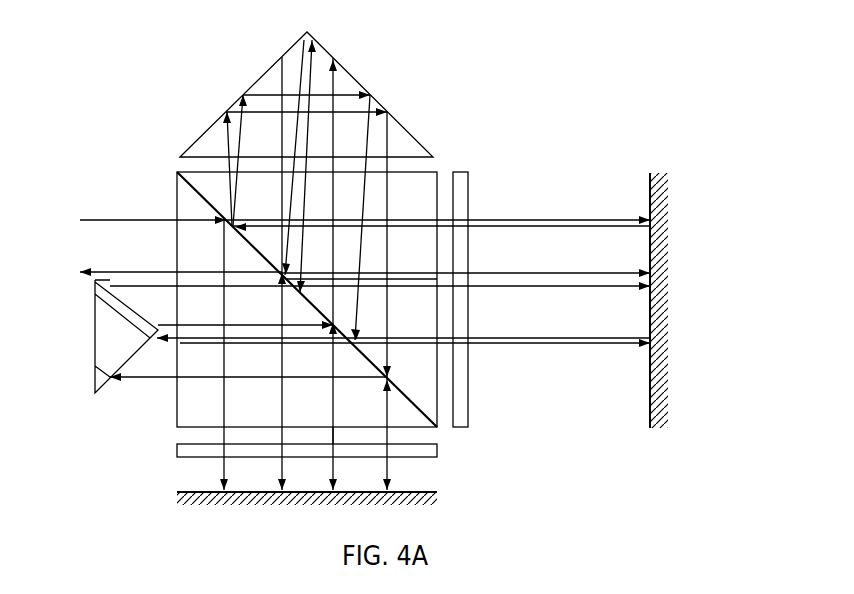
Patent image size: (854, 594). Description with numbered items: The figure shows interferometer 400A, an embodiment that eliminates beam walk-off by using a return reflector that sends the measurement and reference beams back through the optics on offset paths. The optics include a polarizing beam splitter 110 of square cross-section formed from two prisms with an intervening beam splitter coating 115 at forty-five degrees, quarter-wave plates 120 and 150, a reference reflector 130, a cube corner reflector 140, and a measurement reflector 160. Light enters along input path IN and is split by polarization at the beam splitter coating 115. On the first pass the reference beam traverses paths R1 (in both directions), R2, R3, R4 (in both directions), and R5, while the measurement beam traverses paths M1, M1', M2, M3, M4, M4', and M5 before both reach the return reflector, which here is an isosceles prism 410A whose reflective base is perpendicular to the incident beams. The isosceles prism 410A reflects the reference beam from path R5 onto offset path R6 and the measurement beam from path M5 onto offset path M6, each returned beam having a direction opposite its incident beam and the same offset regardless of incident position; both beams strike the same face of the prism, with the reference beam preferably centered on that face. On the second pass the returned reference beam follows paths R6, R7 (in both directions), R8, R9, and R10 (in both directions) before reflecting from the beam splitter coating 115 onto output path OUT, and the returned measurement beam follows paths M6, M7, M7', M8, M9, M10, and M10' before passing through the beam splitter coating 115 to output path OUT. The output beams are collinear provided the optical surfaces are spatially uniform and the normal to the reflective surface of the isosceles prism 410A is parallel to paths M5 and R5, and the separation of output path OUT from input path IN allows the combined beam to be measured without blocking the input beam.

The interferometer 400A is at (143, 52).
The isosceles prism 410A is at (94, 345).
The polarizing beam splitter 110 is at (176, 395).
The beam splitter coating 115 is at (204, 199).
The quarter-wave plate 120 is at (176, 451).
The reference reflector 130 is at (436, 502).
The cube corner reflector 140 is at (428, 153).
The quarter-wave plate 150 is at (463, 173).
The measurement reflector 160 is at (665, 427).
The input path IN is at (153, 208).
The output path OUT is at (181, 261).
The measurement beam path M1 is at (438, 207).
The measurement beam return path M1' is at (441, 201).
The measurement beam path M2 is at (225, 128).
The measurement beam path M3 is at (368, 132).
The measurement beam path M4 is at (415, 355).
The measurement beam return path M4' is at (500, 325).
The measurement beam path M5 is at (192, 340).
The offset measurement beam path M6 is at (168, 283).
The returned measurement beam path M7 is at (471, 297).
The returned measurement beam return path M7' is at (278, 179).
The returned measurement beam path M8 is at (328, 53).
The returned measurement beam path M9 is at (282, 53).
The returned measurement beam path M10 is at (466, 250).
The returned measurement beam return path M10' is at (362, 262).
The reference beam path R1 is at (223, 437).
The reference beam path R2 is at (238, 137).
The reference beam path R3 is at (391, 144).
The reference beam path R4 is at (386, 437).
The reference beam path R5 is at (142, 383).
The offset reference beam path R6 is at (191, 325).
The returned reference beam path R7 is at (332, 437).
The returned reference beam path R8 is at (333, 82).
The returned reference beam path R9 is at (278, 82).
The returned reference beam path R10 is at (281, 437).